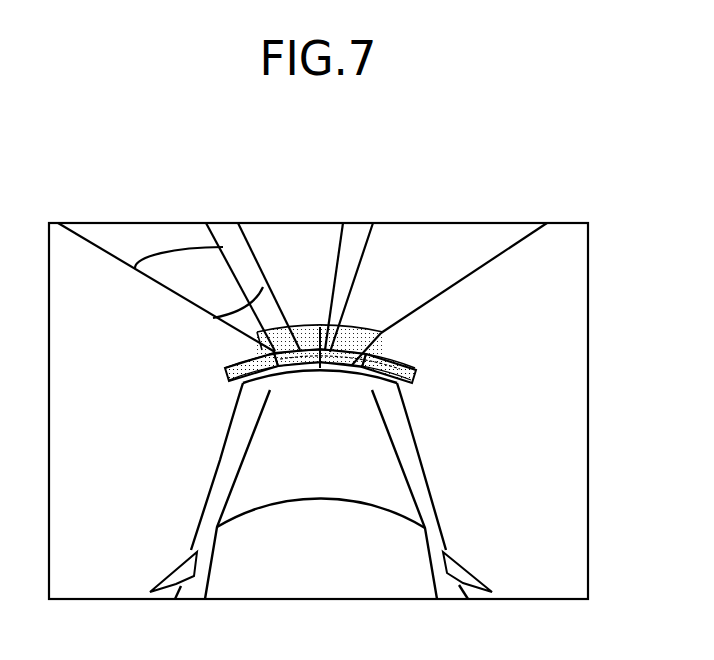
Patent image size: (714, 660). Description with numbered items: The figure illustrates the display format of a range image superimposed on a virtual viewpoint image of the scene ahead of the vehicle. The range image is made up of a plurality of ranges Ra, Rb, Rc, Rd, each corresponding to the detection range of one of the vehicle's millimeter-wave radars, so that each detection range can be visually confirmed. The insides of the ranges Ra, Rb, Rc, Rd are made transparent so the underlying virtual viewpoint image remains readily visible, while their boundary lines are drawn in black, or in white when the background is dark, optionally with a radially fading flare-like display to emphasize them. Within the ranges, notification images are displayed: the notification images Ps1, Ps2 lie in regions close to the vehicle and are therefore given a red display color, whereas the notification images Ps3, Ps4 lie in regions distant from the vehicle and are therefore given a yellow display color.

The range Ra is at (394, 366).
The range Rb is at (233, 356).
The range Rc is at (355, 328).
The range Rd is at (297, 328).
The notification image Ps1 is at (408, 386).
The notification image Ps2 is at (335, 365).
The notification image Ps3 is at (297, 365).
The notification image Ps4 is at (227, 373).